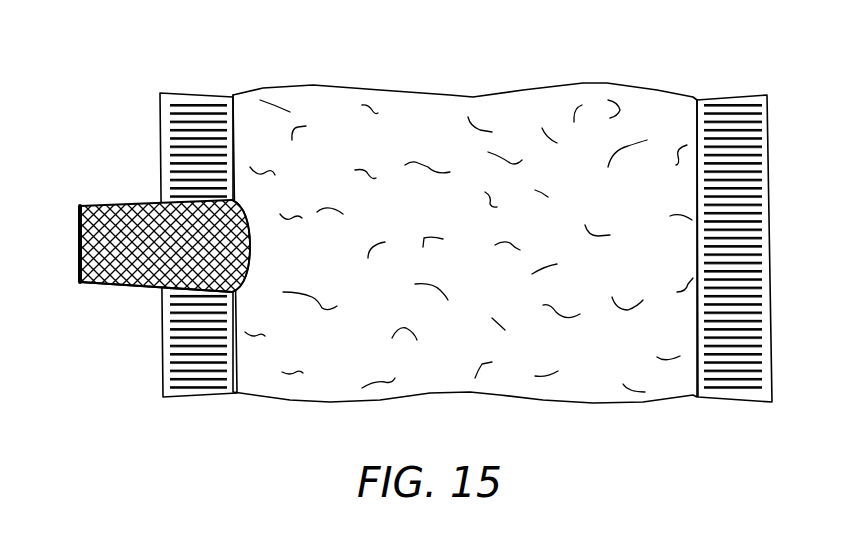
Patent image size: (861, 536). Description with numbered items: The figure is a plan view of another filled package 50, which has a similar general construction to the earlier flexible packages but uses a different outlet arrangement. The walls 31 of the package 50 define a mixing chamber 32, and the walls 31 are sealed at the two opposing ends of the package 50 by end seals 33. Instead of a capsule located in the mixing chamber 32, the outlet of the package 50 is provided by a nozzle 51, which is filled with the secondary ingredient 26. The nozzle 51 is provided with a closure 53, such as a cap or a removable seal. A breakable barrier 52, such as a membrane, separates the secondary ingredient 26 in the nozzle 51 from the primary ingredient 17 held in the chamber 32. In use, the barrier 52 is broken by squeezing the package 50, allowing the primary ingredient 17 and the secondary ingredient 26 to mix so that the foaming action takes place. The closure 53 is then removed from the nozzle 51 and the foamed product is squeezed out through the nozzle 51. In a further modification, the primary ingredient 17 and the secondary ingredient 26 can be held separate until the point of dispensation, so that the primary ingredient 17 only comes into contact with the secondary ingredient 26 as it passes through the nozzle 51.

The package 50 is at (425, 207).
The walls 31 is at (311, 87).
The mixing chamber 32 is at (478, 262).
The end seals 33 is at (180, 156).
The secondary ingredient 26 is at (168, 247).
The breakable barrier 52 is at (250, 247).
The closure 53 is at (78, 240).
The nozzle 51 is at (115, 284).
The primary ingredient 17 is at (428, 167).